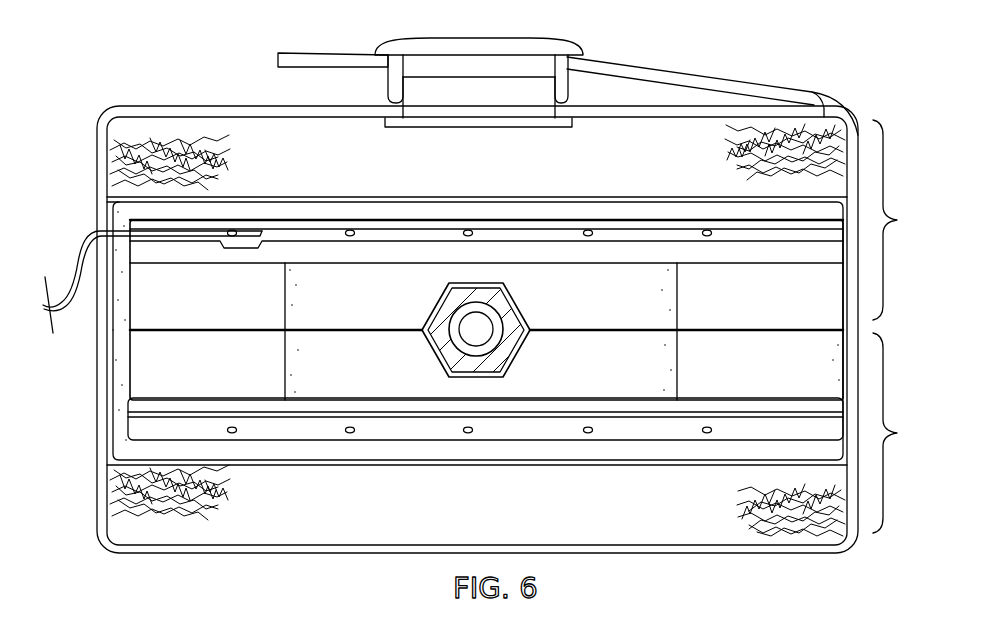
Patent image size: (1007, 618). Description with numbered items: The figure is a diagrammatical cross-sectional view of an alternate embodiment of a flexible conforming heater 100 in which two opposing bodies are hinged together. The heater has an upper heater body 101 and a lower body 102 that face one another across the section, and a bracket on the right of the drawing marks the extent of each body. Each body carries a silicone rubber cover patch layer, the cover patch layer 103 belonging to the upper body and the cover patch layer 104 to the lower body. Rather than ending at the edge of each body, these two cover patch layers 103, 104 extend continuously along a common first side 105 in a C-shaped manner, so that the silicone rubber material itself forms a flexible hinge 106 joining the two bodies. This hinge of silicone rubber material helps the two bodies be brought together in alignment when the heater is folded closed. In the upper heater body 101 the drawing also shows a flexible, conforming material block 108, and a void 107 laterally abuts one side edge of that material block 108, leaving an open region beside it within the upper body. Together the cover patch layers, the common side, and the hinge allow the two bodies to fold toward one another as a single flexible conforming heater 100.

The flexible conforming heater 100 is at (848, 78).
The upper heater body 101 is at (917, 220).
The lower body 102 is at (916, 433).
The silicone rubber cover patch layer 103 is at (416, 207).
The silicone rubber cover patch layer 104 is at (412, 452).
The common first side 105 is at (64, 185).
The flexible hinge 106 is at (113, 336).
The void 107 is at (730, 305).
The flexible conforming material block 108 is at (595, 314).